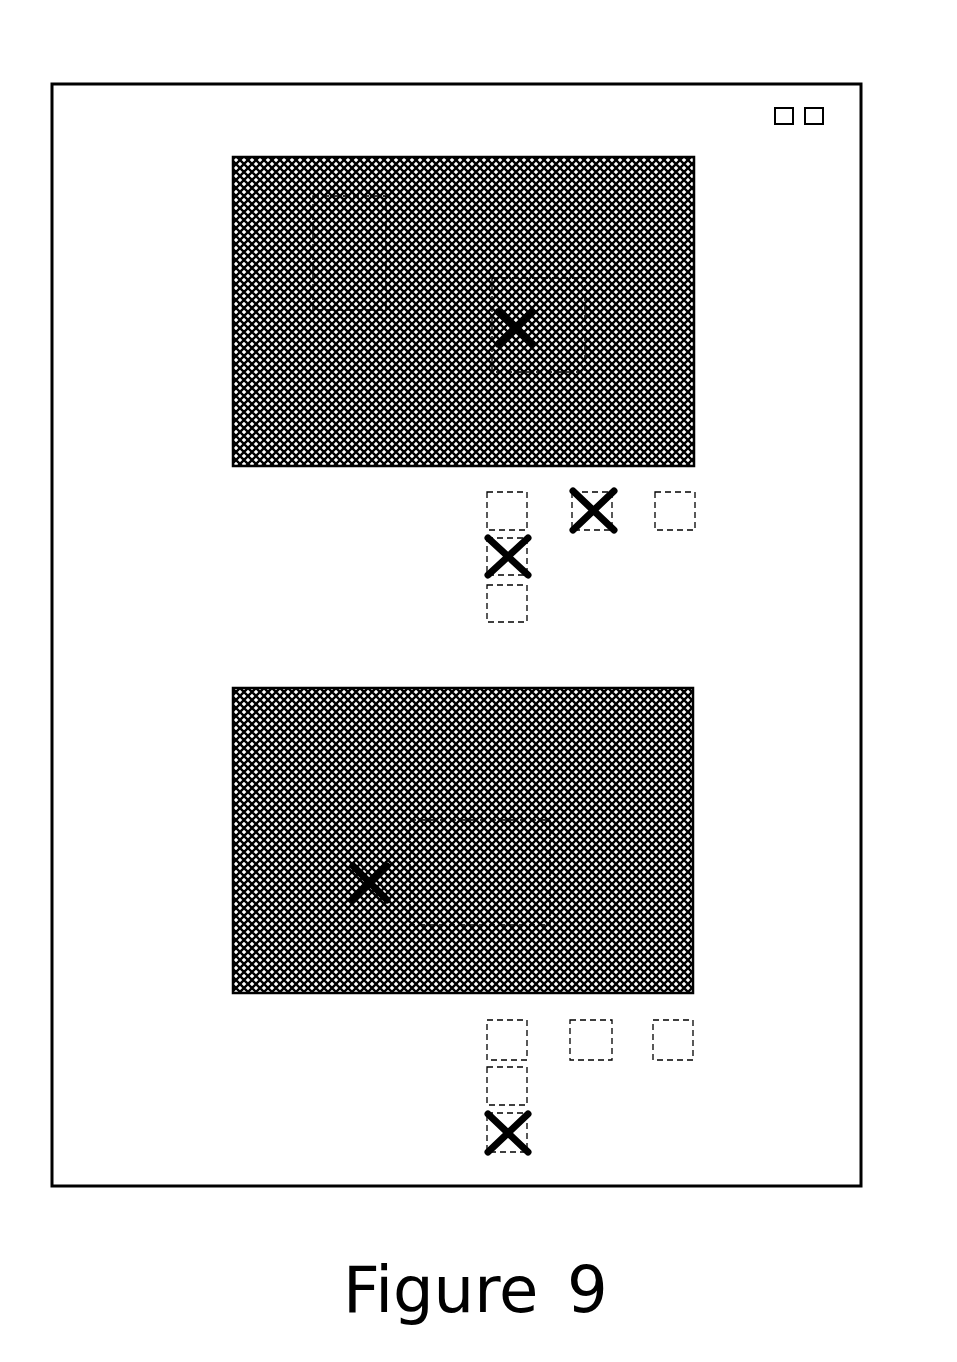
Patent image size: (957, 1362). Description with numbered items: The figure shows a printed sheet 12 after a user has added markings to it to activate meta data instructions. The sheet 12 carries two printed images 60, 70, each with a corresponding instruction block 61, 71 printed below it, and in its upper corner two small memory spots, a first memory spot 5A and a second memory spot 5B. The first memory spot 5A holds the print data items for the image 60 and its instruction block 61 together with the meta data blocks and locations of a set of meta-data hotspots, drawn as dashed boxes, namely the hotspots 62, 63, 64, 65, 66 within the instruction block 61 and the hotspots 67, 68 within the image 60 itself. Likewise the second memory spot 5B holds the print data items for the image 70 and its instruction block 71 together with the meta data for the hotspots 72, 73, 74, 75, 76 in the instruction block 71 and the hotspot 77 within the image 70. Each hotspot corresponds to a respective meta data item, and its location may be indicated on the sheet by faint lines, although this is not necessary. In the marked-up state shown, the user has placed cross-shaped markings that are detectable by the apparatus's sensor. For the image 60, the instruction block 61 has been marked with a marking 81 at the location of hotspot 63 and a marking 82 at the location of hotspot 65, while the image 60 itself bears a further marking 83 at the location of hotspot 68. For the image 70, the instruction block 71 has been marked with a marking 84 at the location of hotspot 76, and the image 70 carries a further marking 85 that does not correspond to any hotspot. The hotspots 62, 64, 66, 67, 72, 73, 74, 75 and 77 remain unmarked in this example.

The sheet 12 is at (826, 84).
The first memory spot 5A is at (780, 125).
The second memory spot 5B is at (814, 125).
The printed image 60 is at (233, 237).
The hotspot 67 is at (313, 230).
The hotspot 68 is at (585, 300).
The marking 83 is at (522, 330).
The instruction block 61 is at (178, 538).
The hotspot 62 is at (537, 486).
The hotspot 63 is at (621, 486).
The hotspot 64 is at (704, 486).
The hotspot 65 is at (527, 552).
The hotspot 66 is at (527, 604).
The marking 81 is at (612, 525).
The marking 82 is at (512, 560).
The printed image 70 is at (233, 757).
The hotspot 77 is at (550, 875).
The marking 85 is at (360, 883).
The instruction block 71 is at (178, 1071).
The hotspot 72 is at (536, 1014).
The hotspot 73 is at (621, 1014).
The hotspot 74 is at (702, 1014).
The hotspot 75 is at (527, 1085).
The hotspot 76 is at (527, 1133).
The marking 84 is at (517, 1148).